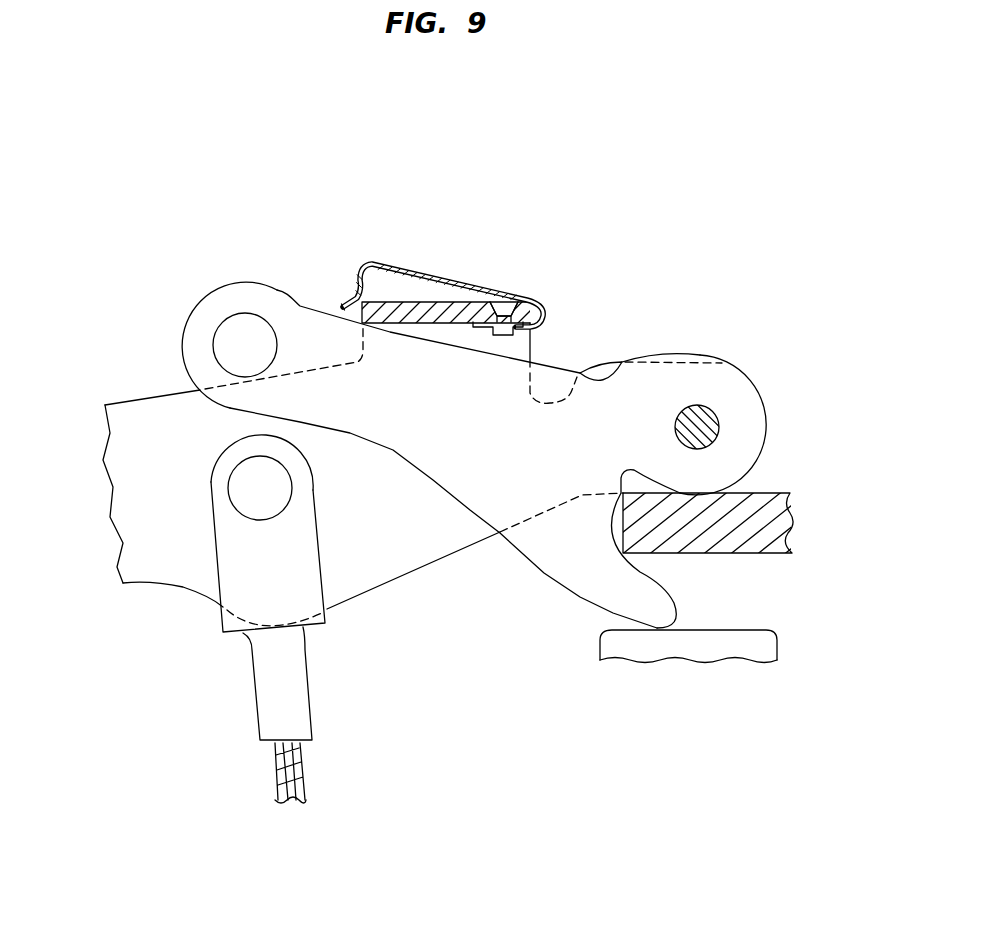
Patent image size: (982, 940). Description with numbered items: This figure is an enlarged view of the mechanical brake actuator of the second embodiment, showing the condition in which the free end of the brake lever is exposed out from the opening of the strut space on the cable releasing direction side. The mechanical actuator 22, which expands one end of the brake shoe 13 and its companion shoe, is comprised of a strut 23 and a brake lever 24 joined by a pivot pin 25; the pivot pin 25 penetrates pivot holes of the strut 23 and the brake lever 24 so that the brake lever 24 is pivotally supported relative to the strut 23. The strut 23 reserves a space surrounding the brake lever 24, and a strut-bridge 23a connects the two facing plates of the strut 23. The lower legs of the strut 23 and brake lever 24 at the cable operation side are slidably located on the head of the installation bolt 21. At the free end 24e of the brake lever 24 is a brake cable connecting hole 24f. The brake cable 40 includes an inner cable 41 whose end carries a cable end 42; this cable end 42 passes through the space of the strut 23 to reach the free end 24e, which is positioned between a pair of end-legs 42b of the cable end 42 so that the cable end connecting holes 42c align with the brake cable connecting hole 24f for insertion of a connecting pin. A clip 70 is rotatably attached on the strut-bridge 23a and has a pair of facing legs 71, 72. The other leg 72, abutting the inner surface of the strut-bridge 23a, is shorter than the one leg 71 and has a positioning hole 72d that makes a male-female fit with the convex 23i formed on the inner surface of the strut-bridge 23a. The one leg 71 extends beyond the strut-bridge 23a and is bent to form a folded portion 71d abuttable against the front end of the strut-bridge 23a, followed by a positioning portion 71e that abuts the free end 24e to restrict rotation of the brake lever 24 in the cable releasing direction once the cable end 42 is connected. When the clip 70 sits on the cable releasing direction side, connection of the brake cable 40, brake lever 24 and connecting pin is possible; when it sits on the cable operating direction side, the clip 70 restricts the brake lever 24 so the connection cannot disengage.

The brake shoe 13 is at (800, 518).
The installation bolt 21 is at (778, 650).
The mechanical actuator 22 is at (481, 262).
The strut 23 is at (140, 392).
The strut-bridge 23a is at (427, 300).
The convex 23i is at (500, 336).
The brake lever 24 is at (326, 306).
The free end 24e is at (192, 320).
The brake cable connecting hole 24f is at (247, 313).
The pivot pin 25 is at (719, 423).
The brake cable 40 is at (226, 619).
The inner cable 41 is at (273, 771).
The cable end 42 is at (248, 673).
The end-leg 42b is at (225, 554).
The cable end connecting hole 42c is at (243, 488).
The clip 70 is at (469, 403).
The one leg 71 is at (500, 289).
The folded portion 71d is at (368, 258).
The positioning portion 71e is at (347, 293).
The other leg 72 is at (520, 330).
The positioning hole 72d is at (497, 336).